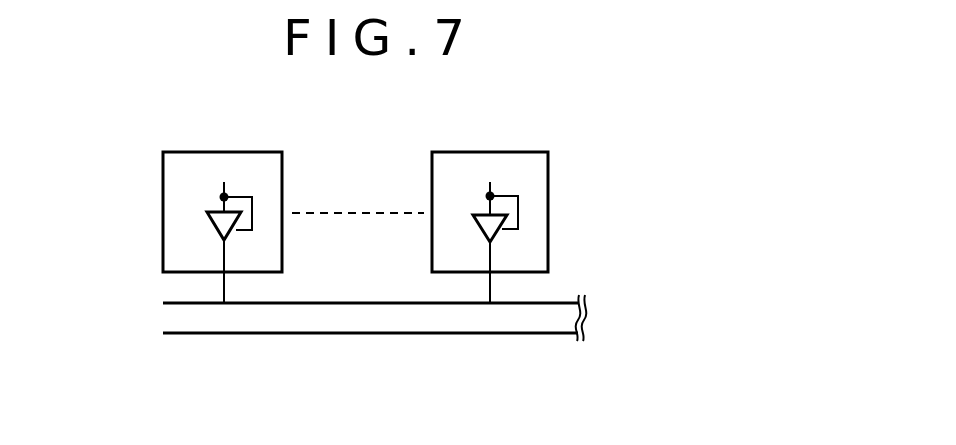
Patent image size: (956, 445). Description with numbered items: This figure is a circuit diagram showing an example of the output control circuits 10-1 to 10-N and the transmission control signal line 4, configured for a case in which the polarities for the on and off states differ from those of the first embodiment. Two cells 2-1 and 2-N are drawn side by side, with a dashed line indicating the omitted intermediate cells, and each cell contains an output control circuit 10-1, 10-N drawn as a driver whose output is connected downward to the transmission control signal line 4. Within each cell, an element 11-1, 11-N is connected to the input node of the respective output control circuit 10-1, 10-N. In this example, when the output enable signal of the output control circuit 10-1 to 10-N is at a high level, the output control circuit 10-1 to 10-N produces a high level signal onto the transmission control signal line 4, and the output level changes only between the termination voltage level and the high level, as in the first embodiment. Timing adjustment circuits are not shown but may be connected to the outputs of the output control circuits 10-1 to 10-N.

The first memory cell 2-1 is at (282, 208).
The N-th memory cell 2-N is at (548, 207).
The output control circuit 10-1 is at (217, 232).
The output control circuit 10-N is at (485, 229).
The first feedback latch element 11-1 is at (240, 196).
The N-th feedback latch element 11-N is at (508, 193).
The transmission control signal line 4 is at (200, 333).